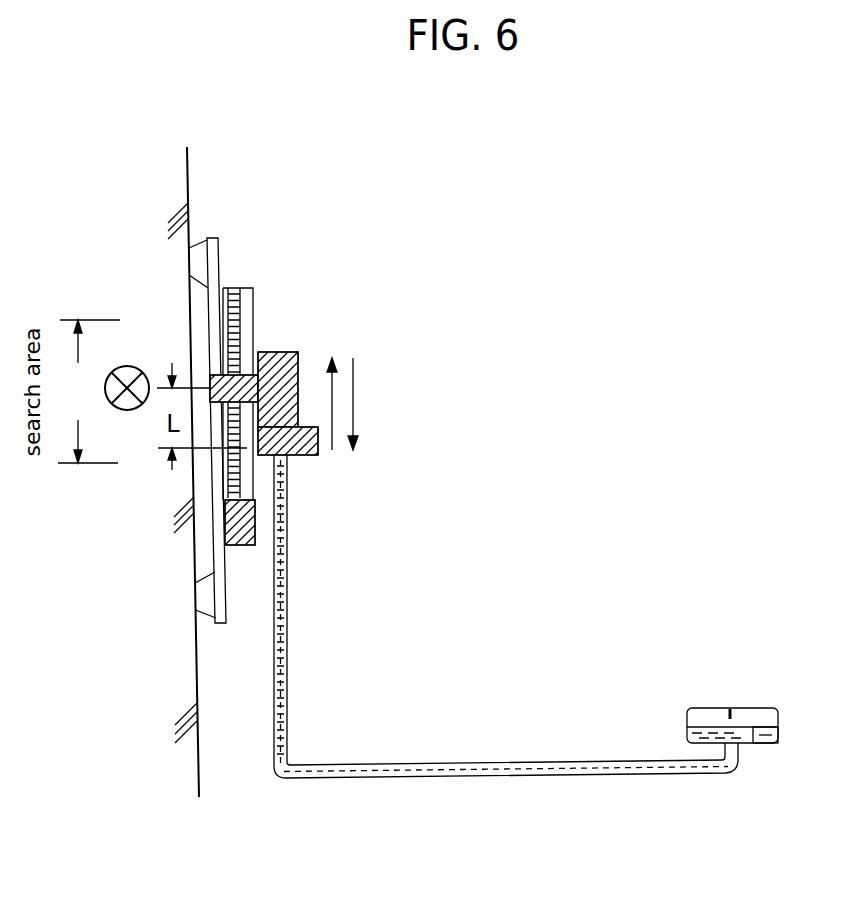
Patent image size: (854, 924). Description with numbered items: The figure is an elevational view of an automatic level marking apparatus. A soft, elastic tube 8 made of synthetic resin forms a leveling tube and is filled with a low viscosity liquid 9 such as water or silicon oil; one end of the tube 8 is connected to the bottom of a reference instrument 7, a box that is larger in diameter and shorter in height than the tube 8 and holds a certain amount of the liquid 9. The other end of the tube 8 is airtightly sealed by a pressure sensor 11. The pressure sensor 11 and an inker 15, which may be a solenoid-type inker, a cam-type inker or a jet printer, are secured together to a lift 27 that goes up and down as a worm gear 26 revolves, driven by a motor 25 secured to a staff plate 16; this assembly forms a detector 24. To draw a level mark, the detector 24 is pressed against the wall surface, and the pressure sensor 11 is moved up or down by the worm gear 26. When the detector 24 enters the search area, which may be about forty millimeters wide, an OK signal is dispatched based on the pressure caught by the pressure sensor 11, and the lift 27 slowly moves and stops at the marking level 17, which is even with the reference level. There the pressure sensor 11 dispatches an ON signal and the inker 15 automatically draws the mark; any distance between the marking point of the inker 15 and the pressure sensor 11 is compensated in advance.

The reference instrument 7 is at (720, 708).
The tube 8 is at (287, 677).
The liquid 9 is at (757, 743).
The pressure sensor 11 is at (311, 457).
The inker 15 is at (297, 352).
The staff plate 16 is at (218, 253).
The marking level 17 is at (129, 410).
The detector 24 is at (365, 387).
The motor 25 is at (255, 525).
The worm gear 26 is at (251, 306).
The lift 27 is at (255, 352).